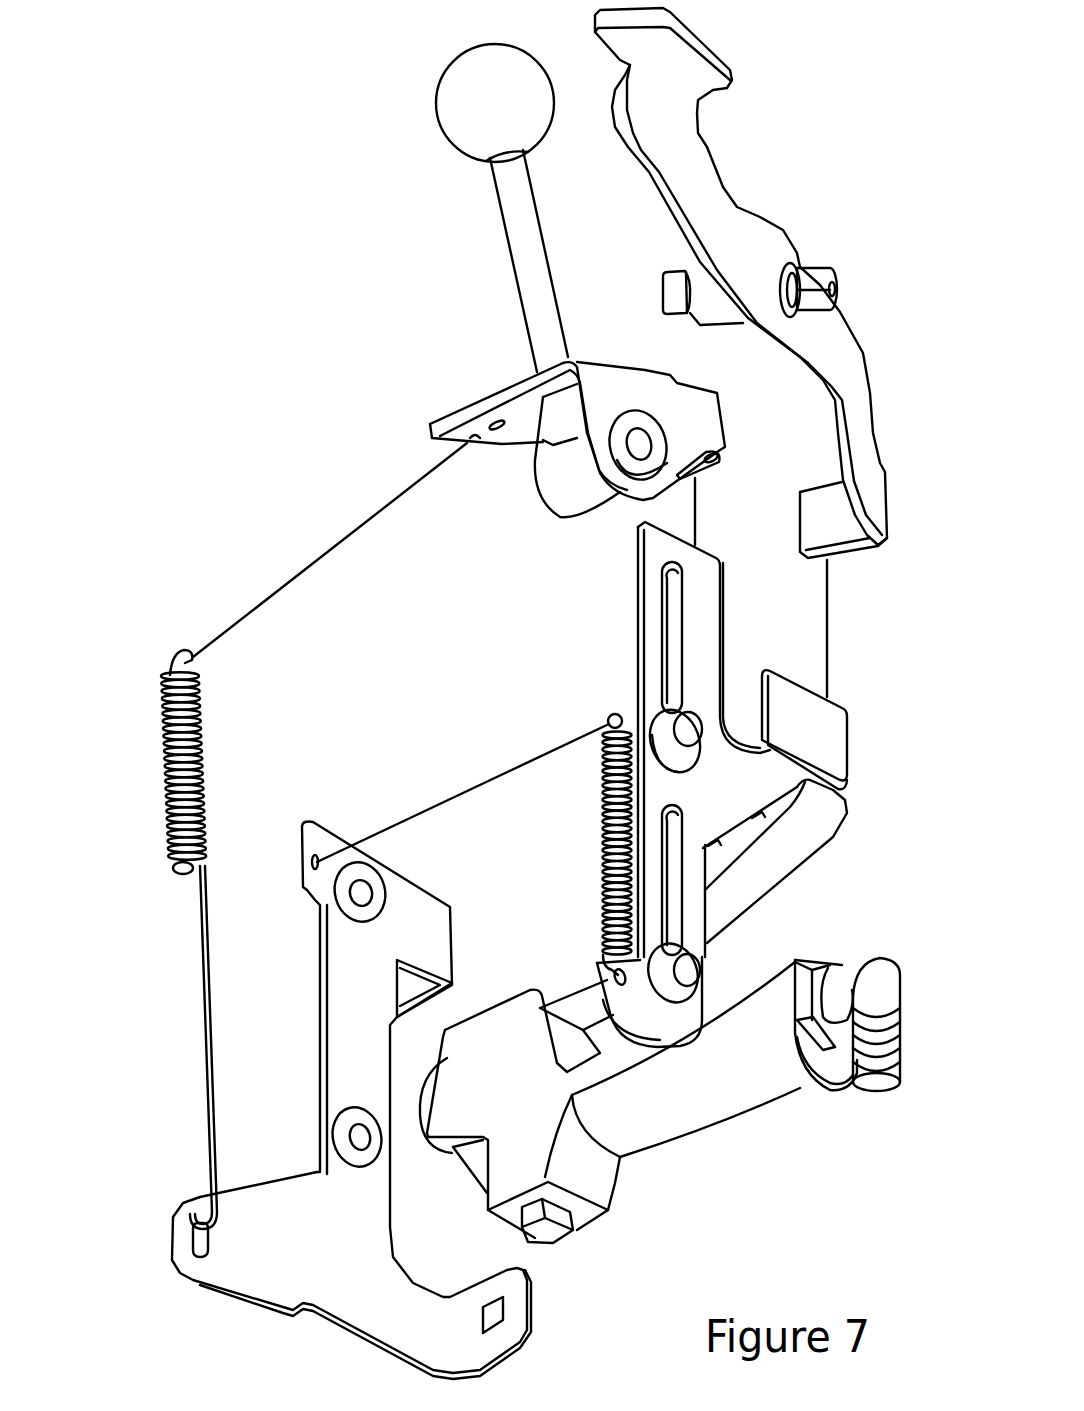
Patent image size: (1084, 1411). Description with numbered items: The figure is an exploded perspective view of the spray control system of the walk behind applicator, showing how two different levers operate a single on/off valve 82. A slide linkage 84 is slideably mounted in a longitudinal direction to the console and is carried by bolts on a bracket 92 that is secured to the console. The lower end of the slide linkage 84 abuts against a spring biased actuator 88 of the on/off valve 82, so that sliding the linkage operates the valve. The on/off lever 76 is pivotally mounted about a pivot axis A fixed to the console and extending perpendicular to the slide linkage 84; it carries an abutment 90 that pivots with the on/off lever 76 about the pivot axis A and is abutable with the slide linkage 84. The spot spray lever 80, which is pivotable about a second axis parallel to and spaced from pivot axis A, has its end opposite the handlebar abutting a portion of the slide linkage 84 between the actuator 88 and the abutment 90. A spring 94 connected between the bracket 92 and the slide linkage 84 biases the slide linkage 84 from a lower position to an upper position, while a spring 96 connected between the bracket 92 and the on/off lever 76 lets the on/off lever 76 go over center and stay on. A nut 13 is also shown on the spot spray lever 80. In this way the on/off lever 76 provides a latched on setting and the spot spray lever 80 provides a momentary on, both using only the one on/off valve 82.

The on/off lever 76 is at (510, 258).
The spot spray lever 80 is at (687, 163).
The nut 13 is at (838, 280).
The pivot axis A is at (640, 443).
The abutment 90 is at (712, 466).
The slide linkage 84 is at (653, 615).
The spring biased actuator 88 is at (782, 852).
The spring 94 is at (603, 831).
The spring 96 is at (162, 765).
The bracket 92 is at (352, 1012).
The on/off valve 82 is at (723, 1082).